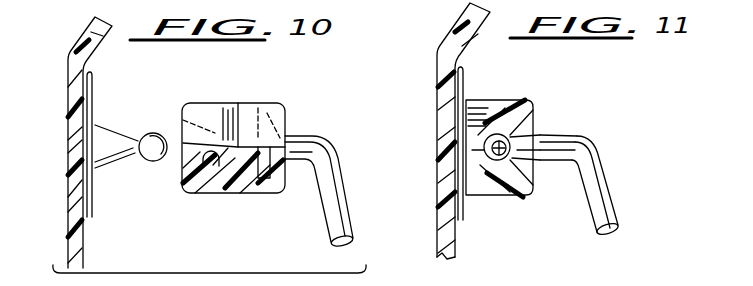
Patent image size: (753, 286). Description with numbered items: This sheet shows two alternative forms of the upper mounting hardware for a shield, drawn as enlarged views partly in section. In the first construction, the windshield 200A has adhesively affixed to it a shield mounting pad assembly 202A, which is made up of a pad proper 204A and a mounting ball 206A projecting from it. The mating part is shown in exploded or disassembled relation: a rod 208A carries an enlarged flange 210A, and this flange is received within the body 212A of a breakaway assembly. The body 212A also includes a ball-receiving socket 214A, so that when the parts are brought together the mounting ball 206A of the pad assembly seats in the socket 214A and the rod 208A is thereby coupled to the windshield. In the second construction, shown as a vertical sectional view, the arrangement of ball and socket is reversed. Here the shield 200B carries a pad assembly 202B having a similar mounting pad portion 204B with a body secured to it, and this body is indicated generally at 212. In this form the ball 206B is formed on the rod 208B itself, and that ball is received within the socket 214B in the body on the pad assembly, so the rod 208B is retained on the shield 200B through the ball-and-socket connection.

In FIG. 10, the windshield 200A is at (63, 83).
In FIG. 10, the shield mounting pad assembly 202A is at (140, 106).
In FIG. 10, the pad proper 204A is at (87, 216).
In FIG. 10, the mounting ball 206A is at (157, 165).
In FIG. 10, the rod 208A is at (330, 192).
In FIG. 10, the enlarged flange 210A is at (263, 122).
In FIG. 10, the body 212A is at (260, 103).
In FIG. 10, the ball-receiving socket 214A is at (204, 173).
In FIG. 11, the shield 200B is at (467, 15).
In FIG. 11, the pad assembly 202B is at (510, 77).
In FIG. 11, the mounting pad portion 204B is at (466, 200).
In FIG. 11, the ball 206B is at (558, 133).
In FIG. 11, the rod 208B is at (608, 200).
In FIG. 11, the connector assembly 212 is at (587, 93).
In FIG. 11, the socket 214B is at (510, 162).